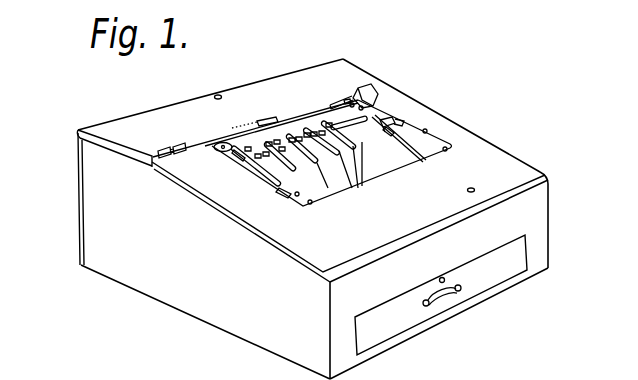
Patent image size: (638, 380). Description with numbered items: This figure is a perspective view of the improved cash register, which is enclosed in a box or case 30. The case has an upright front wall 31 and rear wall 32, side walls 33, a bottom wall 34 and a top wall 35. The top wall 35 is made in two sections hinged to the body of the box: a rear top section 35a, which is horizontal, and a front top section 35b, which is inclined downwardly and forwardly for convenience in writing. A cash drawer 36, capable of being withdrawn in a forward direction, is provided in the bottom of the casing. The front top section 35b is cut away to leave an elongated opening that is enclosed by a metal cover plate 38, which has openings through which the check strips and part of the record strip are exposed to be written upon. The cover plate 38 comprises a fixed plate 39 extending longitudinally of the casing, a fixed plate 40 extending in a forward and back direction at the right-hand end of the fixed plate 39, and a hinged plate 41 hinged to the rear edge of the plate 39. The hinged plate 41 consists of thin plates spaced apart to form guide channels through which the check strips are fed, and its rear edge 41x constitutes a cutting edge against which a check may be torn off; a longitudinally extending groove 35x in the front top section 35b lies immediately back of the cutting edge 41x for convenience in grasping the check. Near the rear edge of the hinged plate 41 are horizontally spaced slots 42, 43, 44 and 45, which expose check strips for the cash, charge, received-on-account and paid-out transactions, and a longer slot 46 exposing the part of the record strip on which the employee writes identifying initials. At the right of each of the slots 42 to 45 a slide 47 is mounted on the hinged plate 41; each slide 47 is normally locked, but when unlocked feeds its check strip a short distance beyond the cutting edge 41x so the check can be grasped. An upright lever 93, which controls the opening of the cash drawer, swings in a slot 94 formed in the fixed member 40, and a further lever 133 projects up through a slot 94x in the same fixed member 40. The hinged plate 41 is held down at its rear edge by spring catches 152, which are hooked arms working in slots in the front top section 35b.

The box or case 30 is at (506, 141).
The front wall 31 is at (527, 207).
The rear wall 32 is at (79, 180).
The side wall 33 is at (168, 287).
The bottom wall 34 is at (250, 343).
The top wall 35 is at (452, 126).
The rear top section 35a is at (110, 132).
The front top section 35b is at (293, 237).
The longitudinally extending groove 35x is at (236, 141).
The cash drawer 36 is at (395, 323).
The metal cover plate 38 is at (391, 120).
The fixed plate 39 is at (381, 163).
The fixed plate 40 is at (425, 130).
The hinged cover plate 41 is at (275, 177).
The rear edge 41x is at (216, 146).
The slot or opening 42 is at (240, 160).
The slot or opening 43 is at (277, 133).
The slot or opening 44 is at (300, 133).
The slot or opening 45 is at (327, 122).
The slot 46 is at (365, 121).
The slide 47 is at (340, 178).
The upright lever 93 is at (378, 112).
The slot 94 is at (398, 122).
The slot 94x is at (455, 175).
The lever 133 is at (393, 128).
The spring catch 152 is at (354, 86).